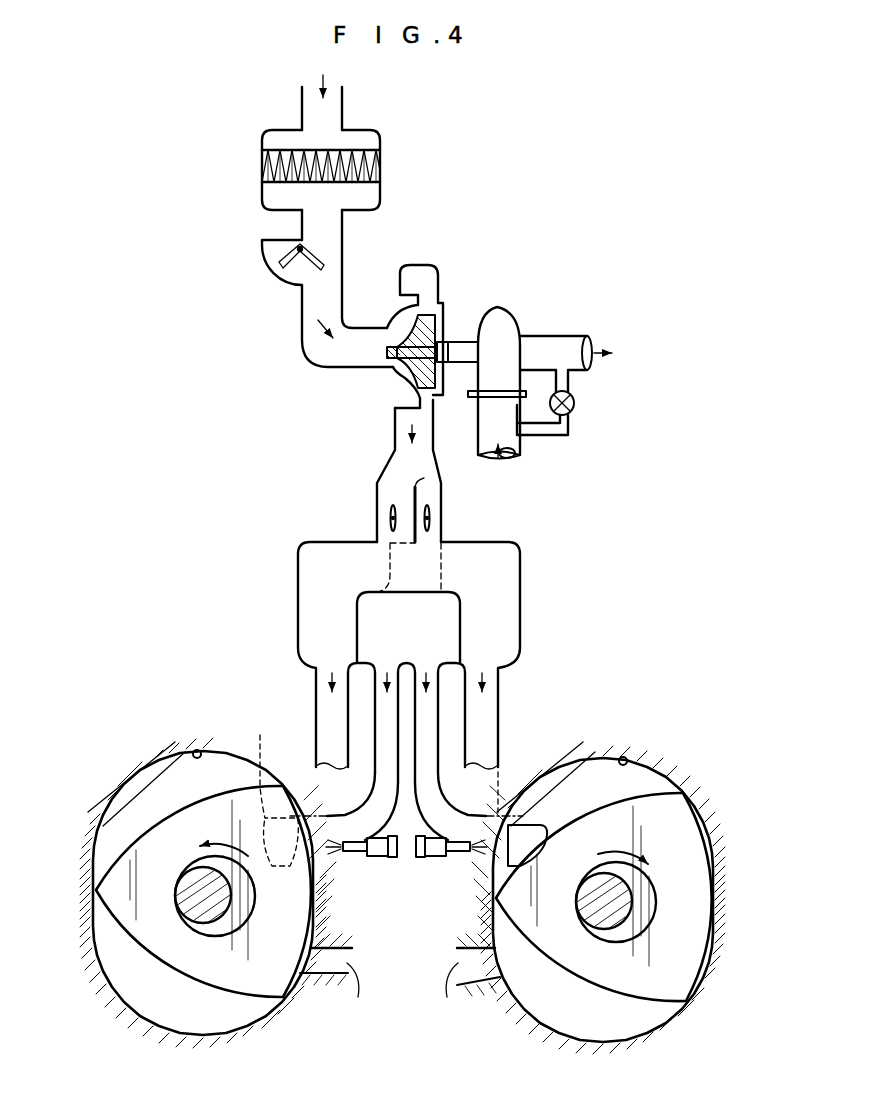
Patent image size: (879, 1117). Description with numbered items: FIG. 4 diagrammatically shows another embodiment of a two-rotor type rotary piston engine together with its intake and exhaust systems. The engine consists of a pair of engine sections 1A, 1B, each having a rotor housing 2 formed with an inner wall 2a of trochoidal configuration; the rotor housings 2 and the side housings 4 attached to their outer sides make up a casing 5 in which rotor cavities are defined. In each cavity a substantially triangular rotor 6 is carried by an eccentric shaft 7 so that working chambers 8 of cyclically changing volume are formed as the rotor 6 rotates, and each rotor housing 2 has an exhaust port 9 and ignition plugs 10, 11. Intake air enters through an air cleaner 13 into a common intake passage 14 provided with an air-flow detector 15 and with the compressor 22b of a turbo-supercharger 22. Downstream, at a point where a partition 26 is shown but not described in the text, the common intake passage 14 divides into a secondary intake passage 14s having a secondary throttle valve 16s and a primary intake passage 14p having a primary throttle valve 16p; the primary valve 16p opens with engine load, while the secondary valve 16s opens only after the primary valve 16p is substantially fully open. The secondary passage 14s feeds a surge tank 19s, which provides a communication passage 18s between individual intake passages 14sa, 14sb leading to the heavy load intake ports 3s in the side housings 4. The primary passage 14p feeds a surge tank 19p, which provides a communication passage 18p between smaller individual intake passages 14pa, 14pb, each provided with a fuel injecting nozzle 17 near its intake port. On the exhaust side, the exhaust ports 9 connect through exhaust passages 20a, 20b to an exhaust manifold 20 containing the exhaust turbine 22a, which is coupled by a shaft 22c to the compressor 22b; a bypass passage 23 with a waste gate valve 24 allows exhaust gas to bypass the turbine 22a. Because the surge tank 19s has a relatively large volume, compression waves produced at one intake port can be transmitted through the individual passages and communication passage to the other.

The engine section 1A is at (150, 713).
The engine section 1B is at (675, 724).
The rotor housing 2 is at (180, 751).
The inner wall 2a is at (198, 750).
The intake port 3s is at (260, 737).
The side housing 4 is at (135, 802).
The casing 5 is at (143, 757).
The rotor 6 is at (237, 997).
The eccentric shaft 7 is at (220, 933).
The working chamber 8 is at (181, 796).
The exhaust port 9 is at (310, 962).
The ignition plug 10 is at (90, 906).
The ignition plug 11 is at (92, 863).
The air cleaner 13 is at (386, 166).
The common intake passage 14 is at (330, 231).
The secondary intake passage 14s is at (386, 483).
The primary intake passage 14p is at (438, 495).
The individual intake passage 14sa is at (322, 673).
The individual intake passage 14sb is at (492, 673).
The individual intake passage 14pa is at (378, 708).
The individual intake passage 14pb is at (432, 708).
The air-flow detector 15 is at (258, 268).
The secondary throttle valve 16s is at (393, 527).
The primary throttle valve 16p is at (433, 527).
The fuel injecting nozzle 17 is at (378, 859).
The communication passage 18s is at (348, 560).
The communication passage 18p is at (410, 628).
The surge tank 19s is at (297, 593).
The surge tank 19p is at (462, 645).
The exhaust manifold 20 is at (568, 345).
The exhaust passage 20a is at (366, 993).
The exhaust passage 20b is at (435, 993).
The turbo-supercharger 22 is at (417, 344).
The exhaust turbine 22a is at (492, 332).
The compressor 22b is at (394, 374).
The shaft 22c is at (450, 382).
The bypass passage 23 is at (574, 429).
The waste gate valve 24 is at (576, 404).
The partition wall 26 is at (424, 488).